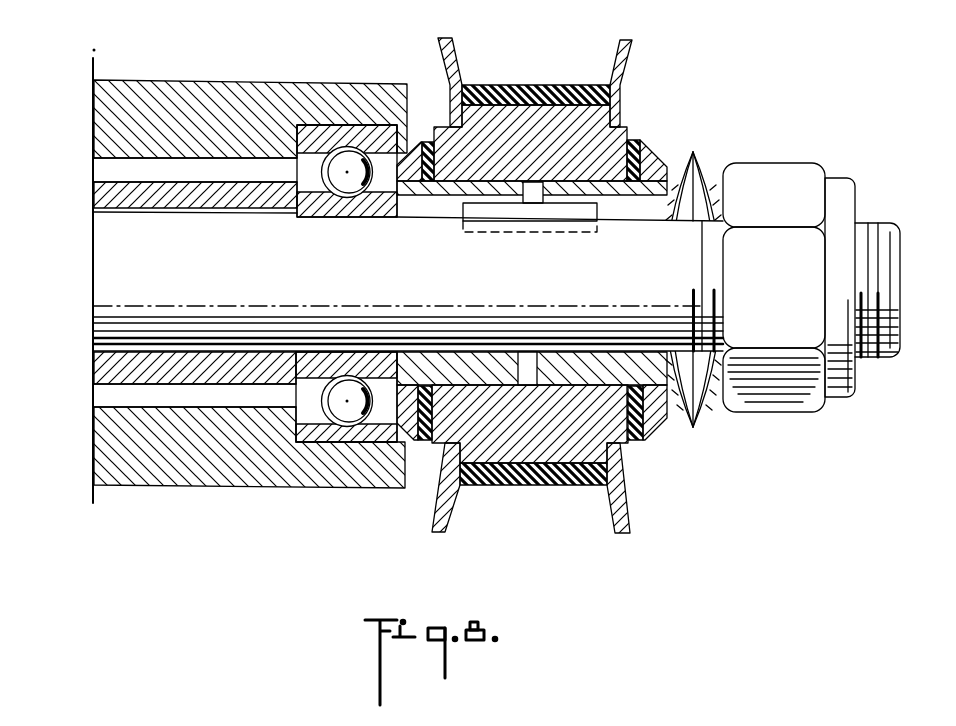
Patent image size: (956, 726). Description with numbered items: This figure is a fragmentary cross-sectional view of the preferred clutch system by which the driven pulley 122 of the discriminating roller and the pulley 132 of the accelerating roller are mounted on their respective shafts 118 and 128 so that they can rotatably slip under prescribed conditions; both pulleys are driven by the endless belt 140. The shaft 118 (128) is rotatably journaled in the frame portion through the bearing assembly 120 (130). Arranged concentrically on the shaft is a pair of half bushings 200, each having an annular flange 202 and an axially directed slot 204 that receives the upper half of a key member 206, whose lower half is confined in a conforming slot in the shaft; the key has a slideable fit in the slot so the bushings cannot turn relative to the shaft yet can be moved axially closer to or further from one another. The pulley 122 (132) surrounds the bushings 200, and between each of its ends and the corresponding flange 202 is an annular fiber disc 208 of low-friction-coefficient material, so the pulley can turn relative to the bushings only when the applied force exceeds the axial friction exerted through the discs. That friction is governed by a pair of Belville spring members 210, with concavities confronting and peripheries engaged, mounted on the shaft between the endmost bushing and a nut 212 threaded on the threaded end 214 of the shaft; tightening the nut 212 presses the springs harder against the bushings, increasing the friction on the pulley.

The shaft 118 is at (368, 316).
The shaft 128 is at (408, 341).
The bearing assembly 120 is at (250, 276).
The bearing assembly 130 is at (195, 274).
The driven pulley 122 is at (533, 101).
The pulley 132 is at (543, 113).
The endless belt 140 is at (557, 488).
The half bushings 200 is at (572, 377).
The annular flange 202 is at (393, 447).
The axially directed slot 204 is at (648, 193).
The key member 206 is at (468, 216).
The annular fiber disc 208 is at (430, 145).
The Belville spring members 210 is at (700, 426).
The nut 212 is at (804, 176).
The threaded end 214 is at (878, 358).